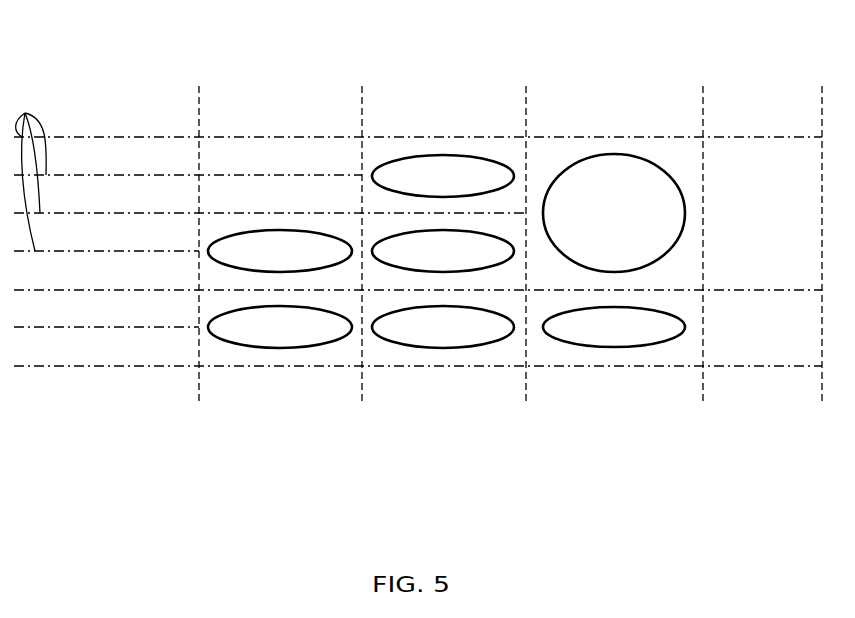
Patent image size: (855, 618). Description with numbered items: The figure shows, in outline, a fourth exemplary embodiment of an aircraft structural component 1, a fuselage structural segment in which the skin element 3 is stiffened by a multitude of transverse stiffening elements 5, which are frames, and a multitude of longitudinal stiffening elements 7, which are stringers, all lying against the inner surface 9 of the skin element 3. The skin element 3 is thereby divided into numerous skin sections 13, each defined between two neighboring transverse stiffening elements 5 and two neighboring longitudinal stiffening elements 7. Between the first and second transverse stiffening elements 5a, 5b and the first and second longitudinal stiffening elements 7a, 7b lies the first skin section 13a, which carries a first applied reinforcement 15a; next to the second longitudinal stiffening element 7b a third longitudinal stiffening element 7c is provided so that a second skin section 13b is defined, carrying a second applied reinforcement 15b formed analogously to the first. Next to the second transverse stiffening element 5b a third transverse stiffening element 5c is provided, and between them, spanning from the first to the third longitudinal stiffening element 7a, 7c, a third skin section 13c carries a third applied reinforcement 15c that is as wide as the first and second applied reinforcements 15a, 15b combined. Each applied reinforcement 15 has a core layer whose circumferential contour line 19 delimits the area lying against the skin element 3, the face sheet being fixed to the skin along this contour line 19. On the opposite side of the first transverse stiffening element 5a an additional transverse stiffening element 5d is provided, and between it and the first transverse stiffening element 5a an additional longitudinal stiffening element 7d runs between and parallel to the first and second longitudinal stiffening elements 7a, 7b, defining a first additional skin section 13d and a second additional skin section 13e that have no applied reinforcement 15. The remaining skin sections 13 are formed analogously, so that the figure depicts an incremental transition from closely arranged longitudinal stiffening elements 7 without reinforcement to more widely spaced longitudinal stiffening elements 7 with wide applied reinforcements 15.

The aircraft structural component 1 is at (78, 70).
The skin element 3 is at (672, 155).
The transverse stiffening elements 5 is at (199, 380).
The first transverse stiffening element 5a is at (362, 122).
The second transverse stiffening element 5b is at (526, 122).
The third transverse stiffening element 5c is at (703, 122).
The additional transverse stiffening element 5d is at (199, 122).
The longitudinal stiffening elements 7 is at (31, 169).
The first longitudinal stiffening element 7a is at (98, 137).
The second longitudinal stiffening element 7b is at (98, 213).
The third longitudinal stiffening element 7c is at (60, 290).
The additional longitudinal stiffening element 7d is at (98, 175).
The inner surface 9 is at (770, 226).
The skin sections 13 is at (493, 202).
The first skin section 13a is at (393, 149).
The second skin section 13b is at (513, 223).
The third skin section 13c is at (563, 168).
The first additional skin section 13d is at (297, 166).
The second additional skin section 13e is at (297, 204).
The applied reinforcement 15 is at (402, 258).
The first applied reinforcement 15a is at (460, 189).
The second applied reinforcement 15b is at (460, 264).
The third applied reinforcement 15c is at (630, 227).
The contour line 19 is at (677, 180).